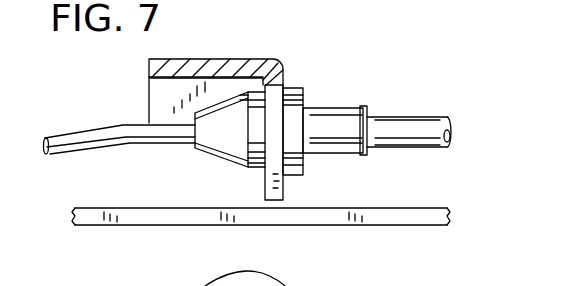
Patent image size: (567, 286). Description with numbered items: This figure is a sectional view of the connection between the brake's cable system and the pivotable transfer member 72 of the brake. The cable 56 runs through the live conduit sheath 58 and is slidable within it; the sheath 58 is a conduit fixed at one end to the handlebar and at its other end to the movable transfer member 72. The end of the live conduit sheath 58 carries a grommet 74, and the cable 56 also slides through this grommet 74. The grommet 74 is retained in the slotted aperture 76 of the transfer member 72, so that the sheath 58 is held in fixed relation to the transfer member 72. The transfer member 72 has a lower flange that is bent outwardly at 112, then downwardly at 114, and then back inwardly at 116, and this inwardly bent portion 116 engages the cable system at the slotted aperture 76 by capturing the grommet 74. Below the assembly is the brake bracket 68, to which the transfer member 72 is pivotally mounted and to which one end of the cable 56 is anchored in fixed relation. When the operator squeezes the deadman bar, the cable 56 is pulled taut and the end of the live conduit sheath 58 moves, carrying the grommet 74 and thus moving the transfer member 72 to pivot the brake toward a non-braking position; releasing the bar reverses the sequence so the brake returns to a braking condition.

The cable 56 is at (92, 149).
The live conduit sheath 58 is at (387, 128).
The brake bracket 68 is at (317, 221).
The transfer member 72 is at (262, 57).
The grommet 74 is at (242, 168).
The slotted aperture 76 is at (303, 104).
The outwardly bent portion 112 is at (165, 100).
The downwardly bent portion 114 is at (165, 62).
The inwardly bent portion 116 is at (283, 191).